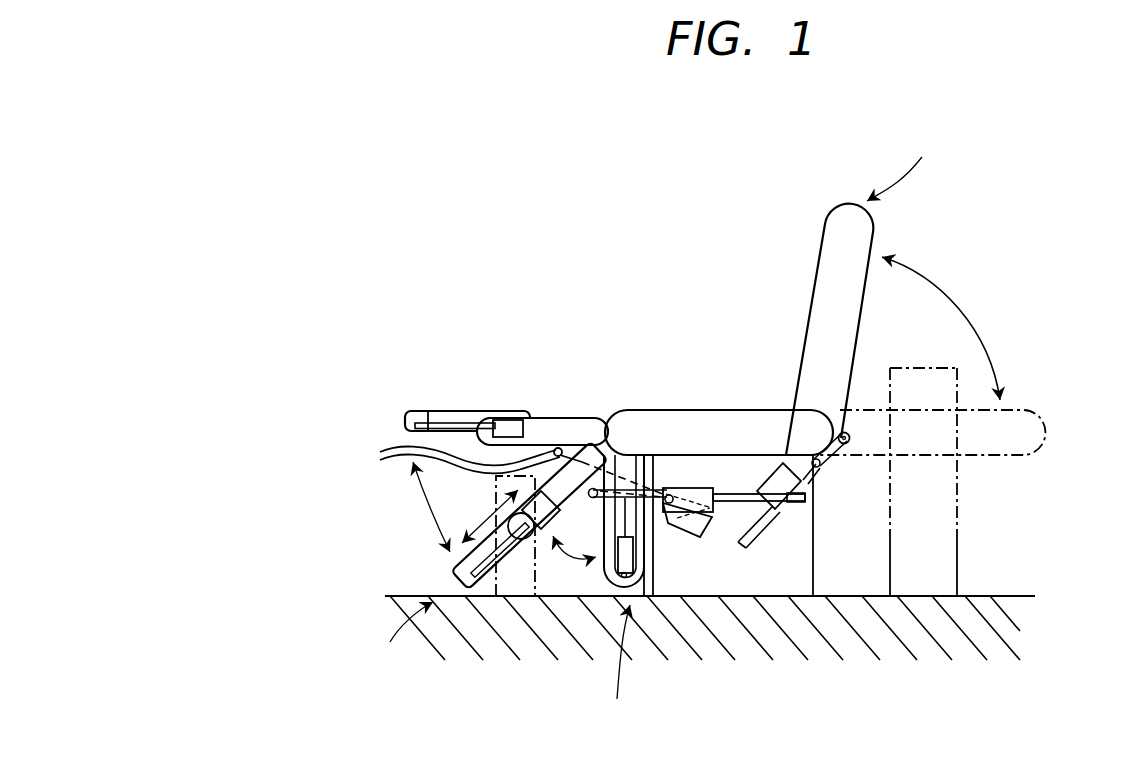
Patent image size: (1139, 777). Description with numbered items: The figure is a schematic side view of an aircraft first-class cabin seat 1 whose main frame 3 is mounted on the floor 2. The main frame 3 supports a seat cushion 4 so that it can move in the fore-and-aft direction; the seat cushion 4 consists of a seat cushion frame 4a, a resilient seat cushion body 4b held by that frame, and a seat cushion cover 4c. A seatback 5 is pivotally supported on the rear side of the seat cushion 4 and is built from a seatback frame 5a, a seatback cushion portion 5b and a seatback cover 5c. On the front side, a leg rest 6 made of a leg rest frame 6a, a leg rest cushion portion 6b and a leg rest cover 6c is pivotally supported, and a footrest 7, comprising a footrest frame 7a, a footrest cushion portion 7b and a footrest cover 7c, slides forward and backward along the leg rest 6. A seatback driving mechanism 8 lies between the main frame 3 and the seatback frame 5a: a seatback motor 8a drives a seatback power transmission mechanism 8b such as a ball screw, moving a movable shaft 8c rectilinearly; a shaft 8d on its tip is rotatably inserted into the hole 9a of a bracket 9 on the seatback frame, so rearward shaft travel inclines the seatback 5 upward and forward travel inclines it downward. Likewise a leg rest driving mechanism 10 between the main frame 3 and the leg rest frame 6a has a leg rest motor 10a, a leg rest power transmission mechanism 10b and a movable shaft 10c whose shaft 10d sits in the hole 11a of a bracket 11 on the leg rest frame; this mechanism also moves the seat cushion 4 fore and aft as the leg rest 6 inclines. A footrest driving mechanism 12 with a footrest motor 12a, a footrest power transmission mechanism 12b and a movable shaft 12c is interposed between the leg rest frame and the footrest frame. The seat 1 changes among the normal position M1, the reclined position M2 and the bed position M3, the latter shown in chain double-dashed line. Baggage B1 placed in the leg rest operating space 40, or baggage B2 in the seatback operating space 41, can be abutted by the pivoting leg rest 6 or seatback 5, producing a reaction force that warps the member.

The seat 1 is at (993, 238).
The floor 2 is at (987, 600).
The main frame 3 is at (860, 598).
The seat cushion 4 is at (657, 420).
The seat cushion frame 4a is at (683, 298).
The seat cushion body 4b is at (683, 298).
The seat cushion cover 4c is at (571, 142).
The seatback 5 is at (828, 232).
The seatback frame 5a is at (788, 291).
The seatback cushion portion 5b is at (788, 295).
The seatback cover 5c is at (746, 135).
The leg rest 6 is at (567, 440).
The leg rest frame 6a is at (542, 375).
The leg rest cushion portion 6b is at (542, 375).
The leg rest cover 6c is at (564, 305).
The footrest 7 is at (406, 412).
The footrest frame 7a is at (383, 336).
The footrest cushion portion 7b is at (383, 336).
The footrest cover 7c is at (275, 235).
The seatback driving mechanism 8 is at (705, 488).
The seatback motor 8a is at (757, 473).
The seatback power transmission mechanism 8b is at (800, 470).
The movable shaft 8c is at (805, 462).
The shaft 8d is at (842, 432).
The bracket 9 is at (850, 436).
The hole 9a is at (844, 438).
The leg rest driving mechanism 10 is at (797, 562).
The leg rest motor 10a is at (713, 540).
The leg rest power transmission mechanism 10b is at (672, 541).
The movable shaft 10c is at (656, 545).
The shaft 10d is at (420, 488).
The bracket 11 is at (430, 483).
The hole 11a is at (380, 461).
The footrest driving mechanism 12 is at (457, 406).
The footrest motor 12a is at (508, 428).
The footrest power transmission mechanism 12b is at (507, 421).
The movable shaft 12c is at (418, 423).
The leg rest operating space 40 is at (500, 473).
The seatback operating space 41 is at (935, 336).
The normal position M1 is at (773, 432).
The reclined position M2 is at (406, 639).
The bed position M3 is at (1037, 412).
The baggage B1 is at (523, 600).
The baggage B2 is at (958, 563).